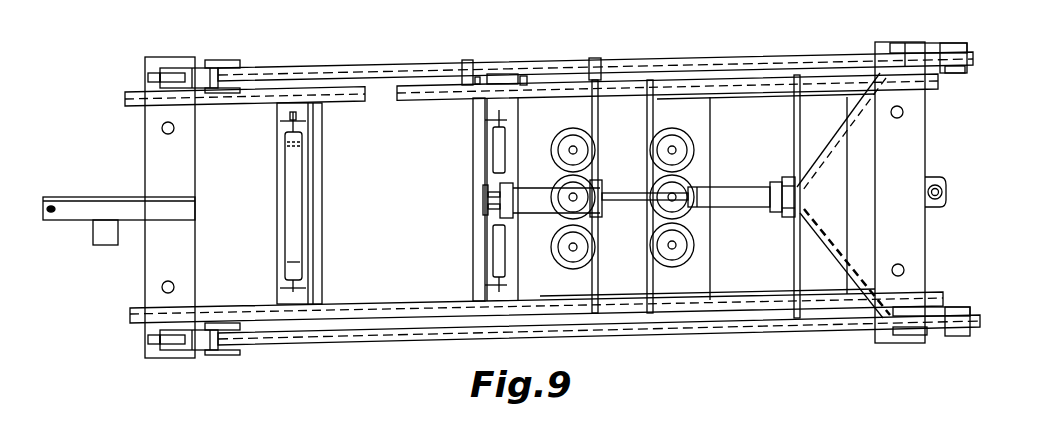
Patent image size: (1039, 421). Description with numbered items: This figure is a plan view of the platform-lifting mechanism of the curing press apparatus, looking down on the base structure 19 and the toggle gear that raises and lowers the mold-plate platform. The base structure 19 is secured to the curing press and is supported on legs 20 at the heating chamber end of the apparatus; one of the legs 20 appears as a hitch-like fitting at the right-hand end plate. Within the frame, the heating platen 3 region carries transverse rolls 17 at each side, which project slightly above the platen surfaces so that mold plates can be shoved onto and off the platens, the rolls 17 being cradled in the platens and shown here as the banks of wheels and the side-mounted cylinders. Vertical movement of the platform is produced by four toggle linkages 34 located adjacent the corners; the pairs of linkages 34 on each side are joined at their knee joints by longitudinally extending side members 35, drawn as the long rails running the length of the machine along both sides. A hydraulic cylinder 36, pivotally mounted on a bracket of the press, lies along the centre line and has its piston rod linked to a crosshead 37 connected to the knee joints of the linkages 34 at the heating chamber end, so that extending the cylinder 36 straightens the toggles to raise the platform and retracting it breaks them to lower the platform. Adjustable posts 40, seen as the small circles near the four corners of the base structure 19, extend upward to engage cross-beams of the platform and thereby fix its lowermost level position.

The heating platen 3 is at (473, 255).
The transverse roll 17 is at (296, 188).
The base structure 19 is at (905, 153).
The leg 20 is at (945, 183).
The toggle linkage 34 is at (201, 60).
The side member 35 is at (376, 69).
The hydraulic cylinder 36 is at (540, 211).
The crosshead 37 is at (832, 136).
The adjustable post 40 is at (174, 128).